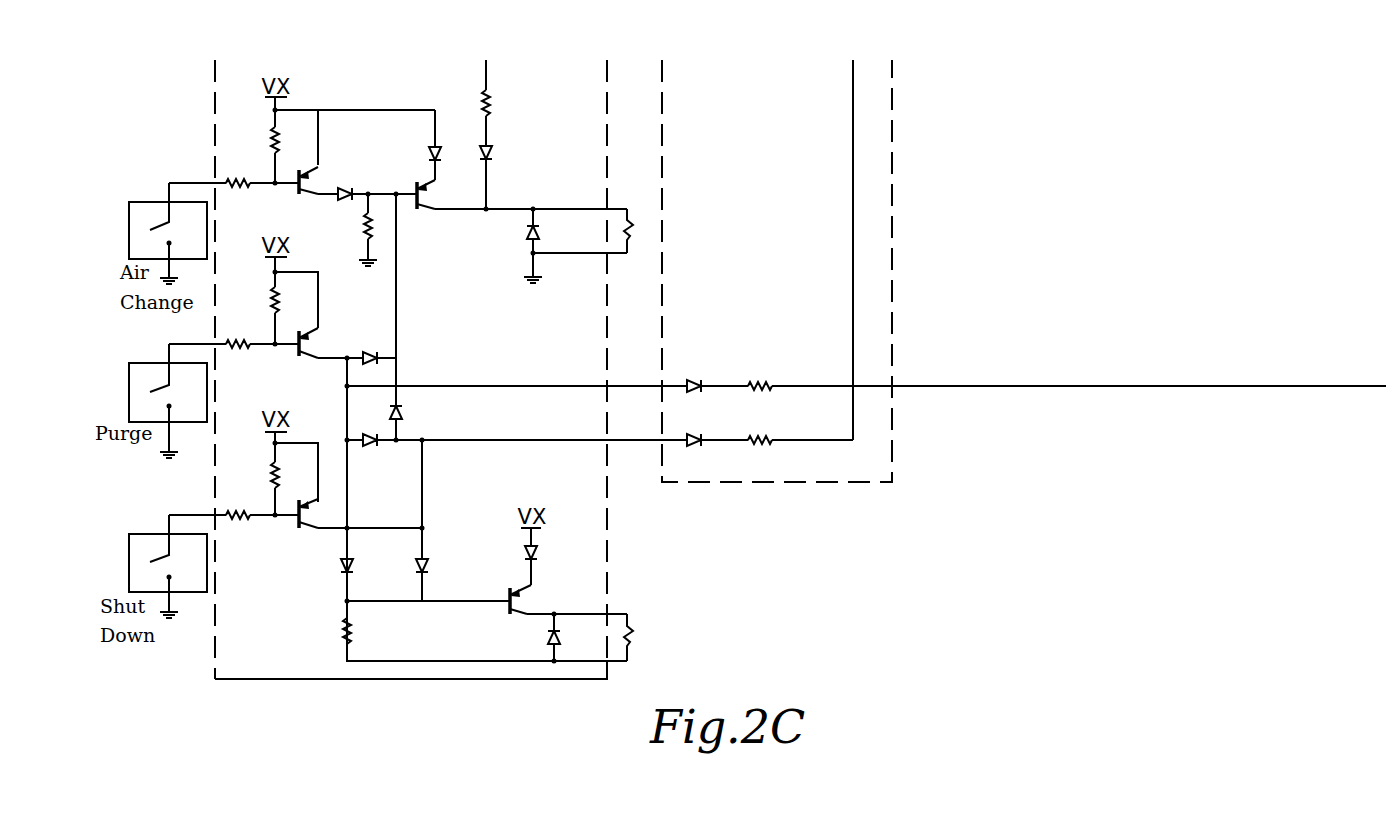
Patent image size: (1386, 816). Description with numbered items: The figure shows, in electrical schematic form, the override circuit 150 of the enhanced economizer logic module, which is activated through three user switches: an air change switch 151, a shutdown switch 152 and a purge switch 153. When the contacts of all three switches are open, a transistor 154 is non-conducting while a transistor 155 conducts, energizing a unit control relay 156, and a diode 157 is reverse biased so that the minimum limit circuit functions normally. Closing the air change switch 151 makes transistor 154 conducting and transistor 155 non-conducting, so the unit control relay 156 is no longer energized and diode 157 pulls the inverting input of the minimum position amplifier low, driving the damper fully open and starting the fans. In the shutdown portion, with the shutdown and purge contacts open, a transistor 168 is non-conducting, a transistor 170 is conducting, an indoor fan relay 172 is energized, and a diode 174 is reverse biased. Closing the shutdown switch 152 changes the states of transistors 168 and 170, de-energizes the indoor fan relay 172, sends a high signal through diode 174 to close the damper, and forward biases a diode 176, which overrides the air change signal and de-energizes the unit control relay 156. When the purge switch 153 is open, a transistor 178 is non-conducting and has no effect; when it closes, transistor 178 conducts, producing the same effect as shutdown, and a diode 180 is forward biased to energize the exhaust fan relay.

The override circuit 150 is at (210, 110).
The air change switch 151 is at (148, 200).
The shutdown switch 152 is at (158, 533).
The purge switch 153 is at (161, 362).
The transistor 154 is at (304, 196).
The transistor 155 is at (413, 186).
The unit control relay 156 is at (627, 212).
The diode 157 is at (492, 152).
The transistor 168 is at (300, 530).
The transistor 170 is at (507, 613).
The indoor fan relay 172 is at (630, 618).
The diode 174 is at (688, 433).
The diode 176 is at (404, 410).
The transistor 178 is at (298, 358).
The diode 180 is at (688, 378).